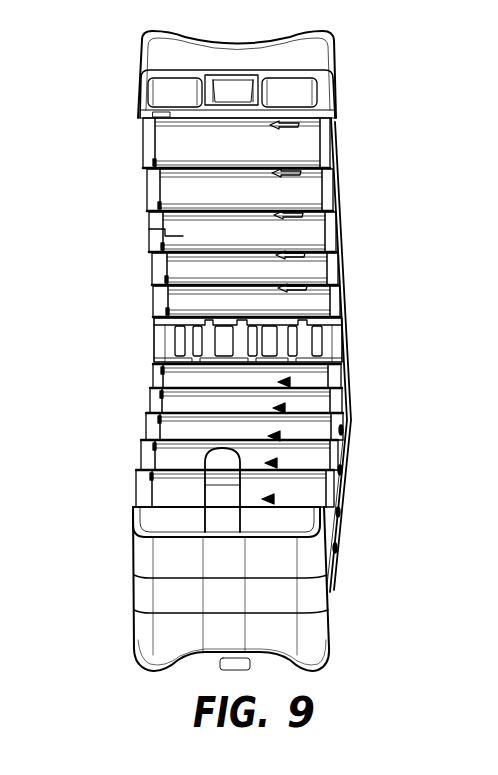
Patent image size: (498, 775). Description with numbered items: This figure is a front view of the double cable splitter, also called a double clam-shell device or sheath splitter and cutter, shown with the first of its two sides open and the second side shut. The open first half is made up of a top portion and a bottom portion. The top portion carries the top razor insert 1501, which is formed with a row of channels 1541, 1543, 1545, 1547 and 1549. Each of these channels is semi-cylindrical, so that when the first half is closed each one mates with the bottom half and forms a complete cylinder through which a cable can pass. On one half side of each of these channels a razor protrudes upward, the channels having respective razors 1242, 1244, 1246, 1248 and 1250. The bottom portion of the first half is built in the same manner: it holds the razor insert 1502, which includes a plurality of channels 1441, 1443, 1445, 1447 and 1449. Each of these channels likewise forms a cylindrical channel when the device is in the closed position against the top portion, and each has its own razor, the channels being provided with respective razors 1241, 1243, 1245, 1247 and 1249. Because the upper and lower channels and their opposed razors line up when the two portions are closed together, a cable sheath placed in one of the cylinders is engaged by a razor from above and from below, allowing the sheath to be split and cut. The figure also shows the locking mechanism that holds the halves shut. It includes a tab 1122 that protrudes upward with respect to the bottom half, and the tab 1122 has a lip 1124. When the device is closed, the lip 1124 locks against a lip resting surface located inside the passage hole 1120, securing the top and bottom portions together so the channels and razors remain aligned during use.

The passage hole 1120 is at (231, 92).
The top razor insert 1501 is at (245, 138).
The razor insert 1502 is at (220, 373).
The tab 1122 is at (225, 512).
The lip 1124 is at (150, 528).
The razor 1242 is at (280, 128).
The razor 1244 is at (282, 176).
The razor 1246 is at (284, 218).
The razor 1248 is at (286, 258).
The razor 1250 is at (288, 291).
The razor 1241 is at (272, 499).
The razor 1243 is at (275, 463).
The razor 1245 is at (278, 436).
The razor 1247 is at (283, 408).
The razor 1249 is at (288, 382).
The channel 1541 is at (178, 143).
The channel 1543 is at (178, 186).
The channel 1545 is at (183, 230).
The channel 1547 is at (183, 264).
The channel 1549 is at (183, 298).
The channel 1441 is at (180, 492).
The channel 1443 is at (180, 459).
The channel 1445 is at (185, 431).
The channel 1447 is at (185, 404).
The channel 1449 is at (185, 377).